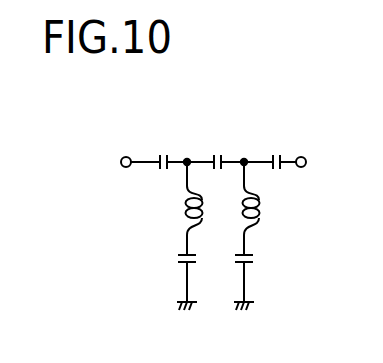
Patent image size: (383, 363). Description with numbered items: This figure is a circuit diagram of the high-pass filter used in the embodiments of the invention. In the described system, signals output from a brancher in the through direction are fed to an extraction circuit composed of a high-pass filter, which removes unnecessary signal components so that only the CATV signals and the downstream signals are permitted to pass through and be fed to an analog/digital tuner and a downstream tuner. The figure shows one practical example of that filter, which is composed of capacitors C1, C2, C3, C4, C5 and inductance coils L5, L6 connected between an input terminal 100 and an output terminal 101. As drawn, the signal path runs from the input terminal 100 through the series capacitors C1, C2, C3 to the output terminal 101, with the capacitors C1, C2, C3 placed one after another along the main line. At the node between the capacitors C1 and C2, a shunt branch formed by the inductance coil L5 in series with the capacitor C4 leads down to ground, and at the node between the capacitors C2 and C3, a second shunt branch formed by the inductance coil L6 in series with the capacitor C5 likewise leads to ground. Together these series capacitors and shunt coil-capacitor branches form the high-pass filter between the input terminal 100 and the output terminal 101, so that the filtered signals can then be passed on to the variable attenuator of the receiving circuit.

The input terminal 100 is at (121, 158).
The output terminal 101 is at (305, 159).
The capacitor C1 is at (160, 149).
The capacitor C2 is at (218, 149).
The capacitor C3 is at (276, 149).
The inductance coil L5 is at (176, 208).
The inductance coil L6 is at (265, 208).
The capacitor C4 is at (173, 282).
The capacitor C5 is at (257, 282).